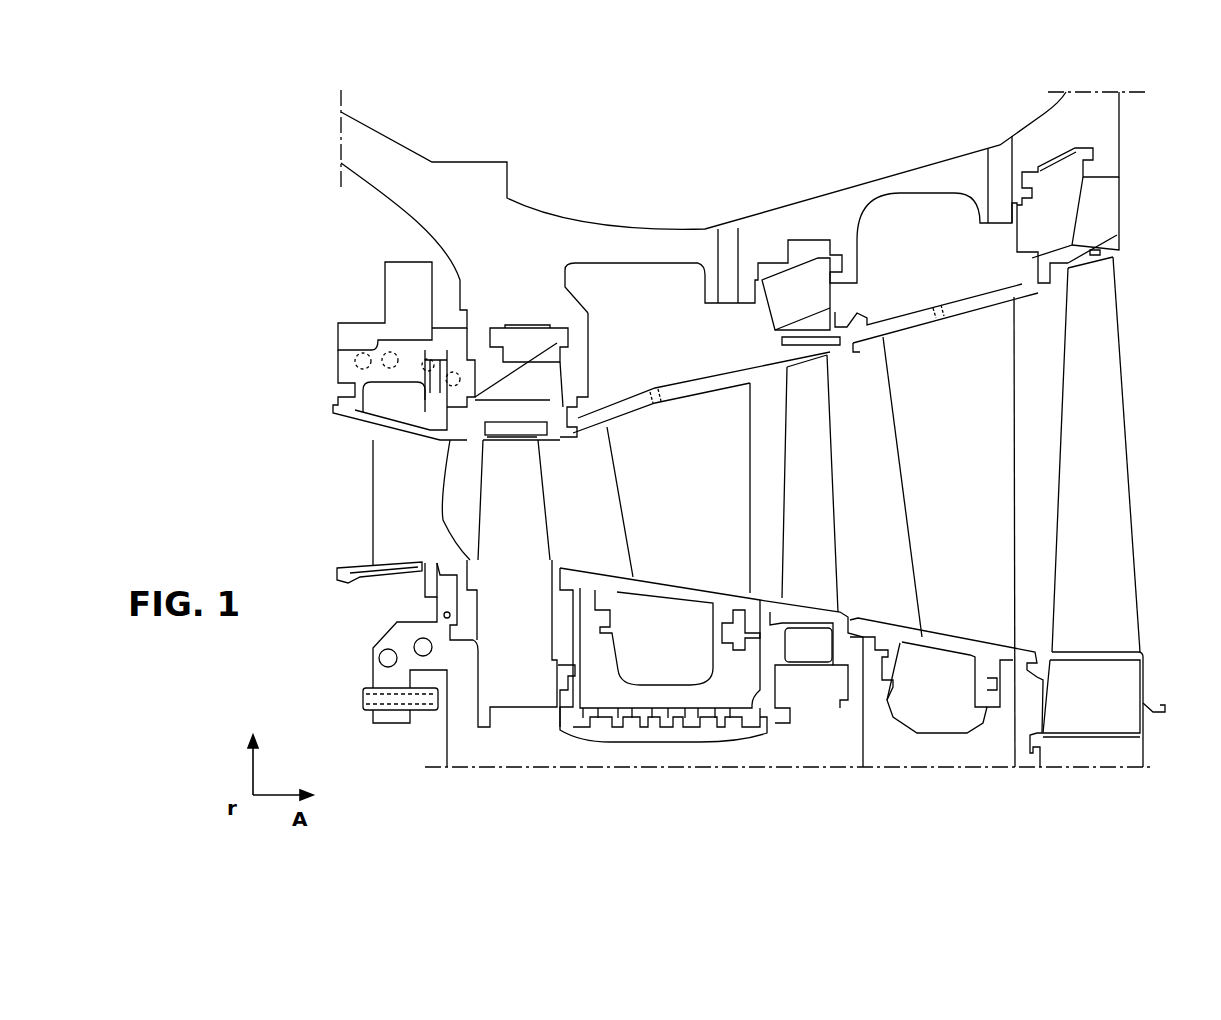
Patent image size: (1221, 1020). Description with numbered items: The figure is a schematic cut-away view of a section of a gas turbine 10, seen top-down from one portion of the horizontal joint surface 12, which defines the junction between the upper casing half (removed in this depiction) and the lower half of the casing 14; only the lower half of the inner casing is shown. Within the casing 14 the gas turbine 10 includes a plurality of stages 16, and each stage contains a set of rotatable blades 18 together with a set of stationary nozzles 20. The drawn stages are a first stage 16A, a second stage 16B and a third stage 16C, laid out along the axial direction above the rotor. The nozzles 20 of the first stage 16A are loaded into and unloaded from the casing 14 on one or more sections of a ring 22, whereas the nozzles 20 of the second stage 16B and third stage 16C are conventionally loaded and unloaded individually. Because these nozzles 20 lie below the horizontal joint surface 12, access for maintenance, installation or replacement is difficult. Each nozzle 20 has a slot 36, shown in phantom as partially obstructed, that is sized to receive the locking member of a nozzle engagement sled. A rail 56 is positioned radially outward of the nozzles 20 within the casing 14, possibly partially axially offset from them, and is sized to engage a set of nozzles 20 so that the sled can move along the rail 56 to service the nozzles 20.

The gas turbine 10 is at (332, 86).
The horizontal joint surface 12 is at (490, 145).
The casing 14 is at (858, 212).
The stages 16 is at (751, 706).
The first stage 16A is at (555, 787).
The second stage 16B is at (855, 787).
The third stage 16C is at (1152, 787).
The blades 18 is at (503, 497).
The nozzles 20 is at (397, 524).
The ring 22 is at (365, 377).
The slot 36 is at (633, 378).
The rail 56 is at (710, 260).